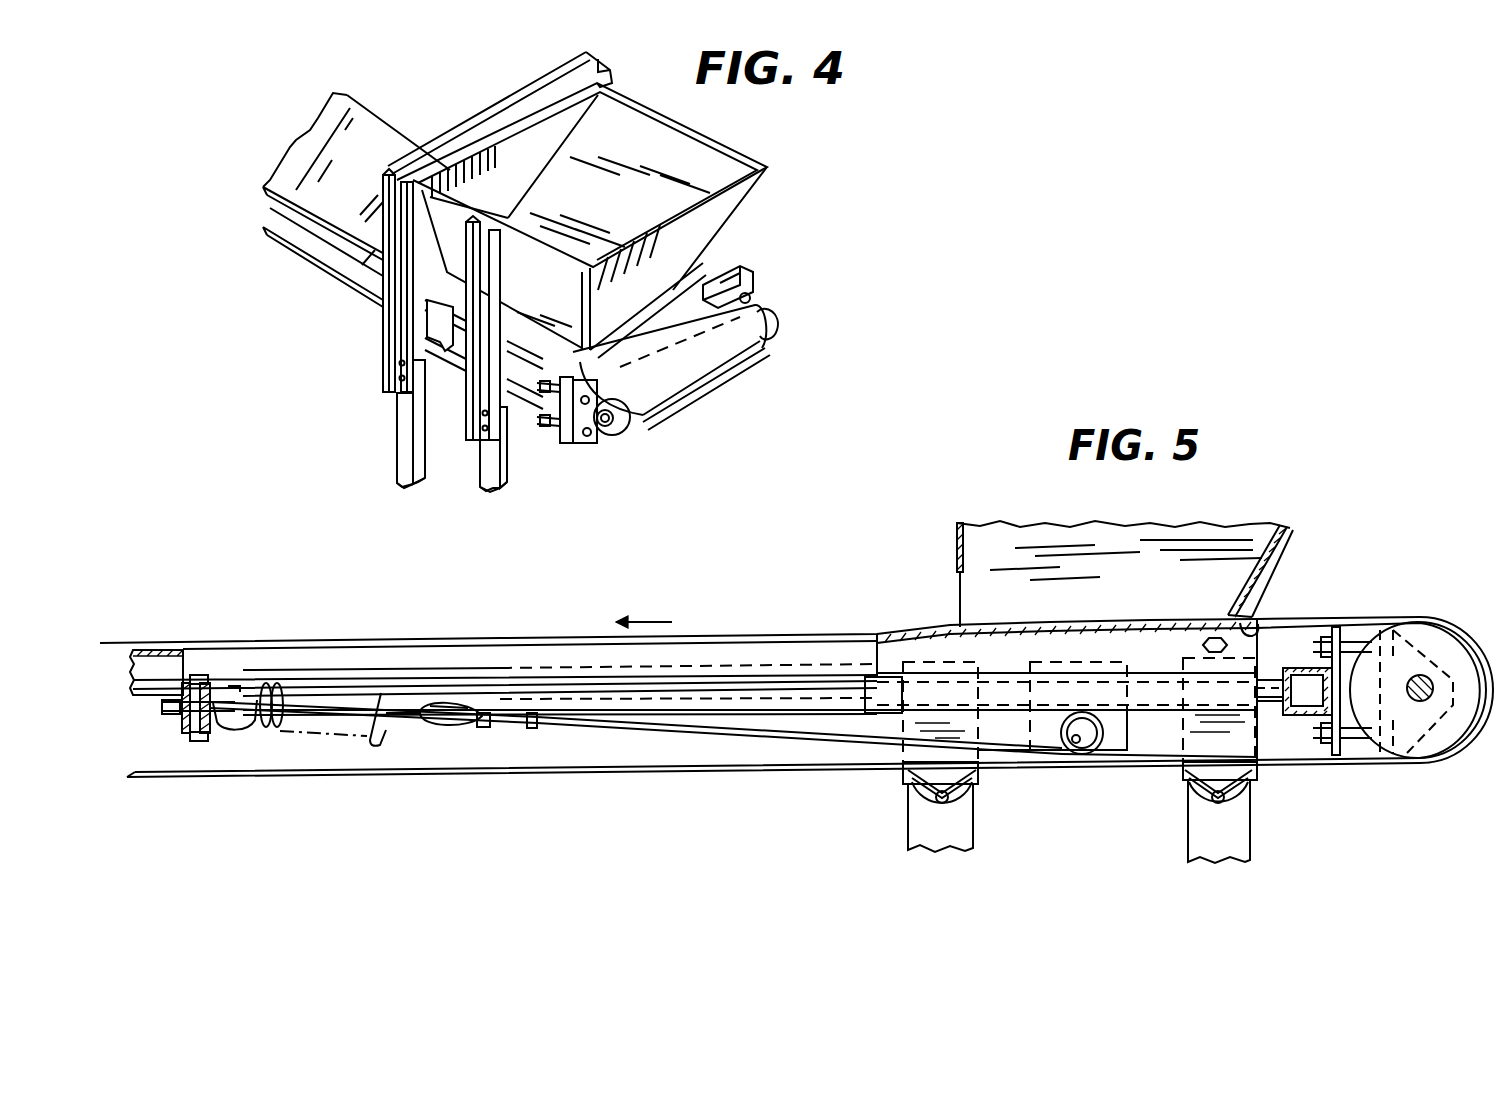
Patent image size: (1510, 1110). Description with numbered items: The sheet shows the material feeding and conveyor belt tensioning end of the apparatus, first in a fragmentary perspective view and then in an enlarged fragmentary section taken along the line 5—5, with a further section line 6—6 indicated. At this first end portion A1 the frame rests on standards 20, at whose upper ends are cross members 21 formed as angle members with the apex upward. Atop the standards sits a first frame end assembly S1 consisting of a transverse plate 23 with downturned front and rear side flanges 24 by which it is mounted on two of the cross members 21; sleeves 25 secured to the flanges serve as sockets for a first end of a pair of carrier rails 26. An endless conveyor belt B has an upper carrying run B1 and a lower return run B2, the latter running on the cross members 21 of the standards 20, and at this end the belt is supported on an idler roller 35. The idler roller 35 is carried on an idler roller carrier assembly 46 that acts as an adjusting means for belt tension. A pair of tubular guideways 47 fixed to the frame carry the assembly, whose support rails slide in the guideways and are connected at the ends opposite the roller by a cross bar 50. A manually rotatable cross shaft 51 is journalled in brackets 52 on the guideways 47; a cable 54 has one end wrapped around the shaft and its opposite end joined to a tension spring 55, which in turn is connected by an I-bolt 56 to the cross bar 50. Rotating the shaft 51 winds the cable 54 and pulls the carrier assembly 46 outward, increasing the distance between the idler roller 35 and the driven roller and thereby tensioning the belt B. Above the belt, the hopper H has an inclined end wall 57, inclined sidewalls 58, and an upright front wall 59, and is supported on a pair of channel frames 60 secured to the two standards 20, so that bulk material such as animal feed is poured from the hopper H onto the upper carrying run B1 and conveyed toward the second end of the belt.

In FIG. 4, the section line 5— 5 is at (296, 99).
In FIG. 5, the section line 6— 6 is at (115, 664).
In FIG. 4, the standards 20 is at (400, 448).
In FIG. 5, the standards 20 is at (917, 828).
In FIG. 5, the cross members 21 is at (960, 800).
In FIG. 5, the transverse plate 23 is at (1262, 632).
In FIG. 5, the side flanges 24 is at (898, 776).
In FIG. 5, the sleeves 25 is at (900, 650).
In FIG. 5, the carrier rails 26 is at (760, 648).
In FIG. 4, the idler roller 35 is at (630, 412).
In FIG. 5, the idler roller 35 is at (1432, 630).
In FIG. 4, the idler roller carrier assembly 46 is at (563, 441).
In FIG. 5, the idler roller carrier assembly 46 is at (587, 742).
In FIG. 5, the tubular guideways 47 is at (875, 713).
In FIG. 5, the cross bar 50 is at (183, 730).
In FIG. 5, the manually rotatable cross shaft 51 is at (1100, 745).
In FIG. 5, the brackets 52 is at (1043, 726).
In FIG. 5, the cable 54 is at (618, 722).
In FIG. 5, the tension spring 55 is at (373, 728).
In FIG. 5, the I-bolt 56 is at (215, 700).
In FIG. 4, the inclined end wall 57 is at (702, 234).
In FIG. 5, the inclined end wall 57 is at (1290, 545).
In FIG. 4, the inclined sidewalls 58 is at (672, 143).
In FIG. 5, the inclined sidewalls 58 is at (1178, 528).
In FIG. 4, the upright front wall 59 is at (546, 165).
In FIG. 5, the upright front wall 59 is at (957, 553).
In FIG. 4, the channel frames 60 is at (385, 344).
In FIG. 4, the first end portion A1 is at (492, 86).
In FIG. 4, the endless conveyor belt B is at (406, 106).
In FIG. 5, the endless conveyor belt B is at (460, 622).
In FIG. 4, the upper carrying run B1 is at (350, 98).
In FIG. 5, the upper carrying run B1 is at (322, 602).
In FIG. 4, the lower return run B2 is at (300, 250).
In FIG. 5, the lower return run B2 is at (462, 773).
In FIG. 4, the hopper H is at (617, 220).
In FIG. 5, the hopper H is at (1143, 560).
In FIG. 4, the first frame end assembly S1 is at (365, 375).
In FIG. 5, the first frame end assembly S1 is at (1032, 778).